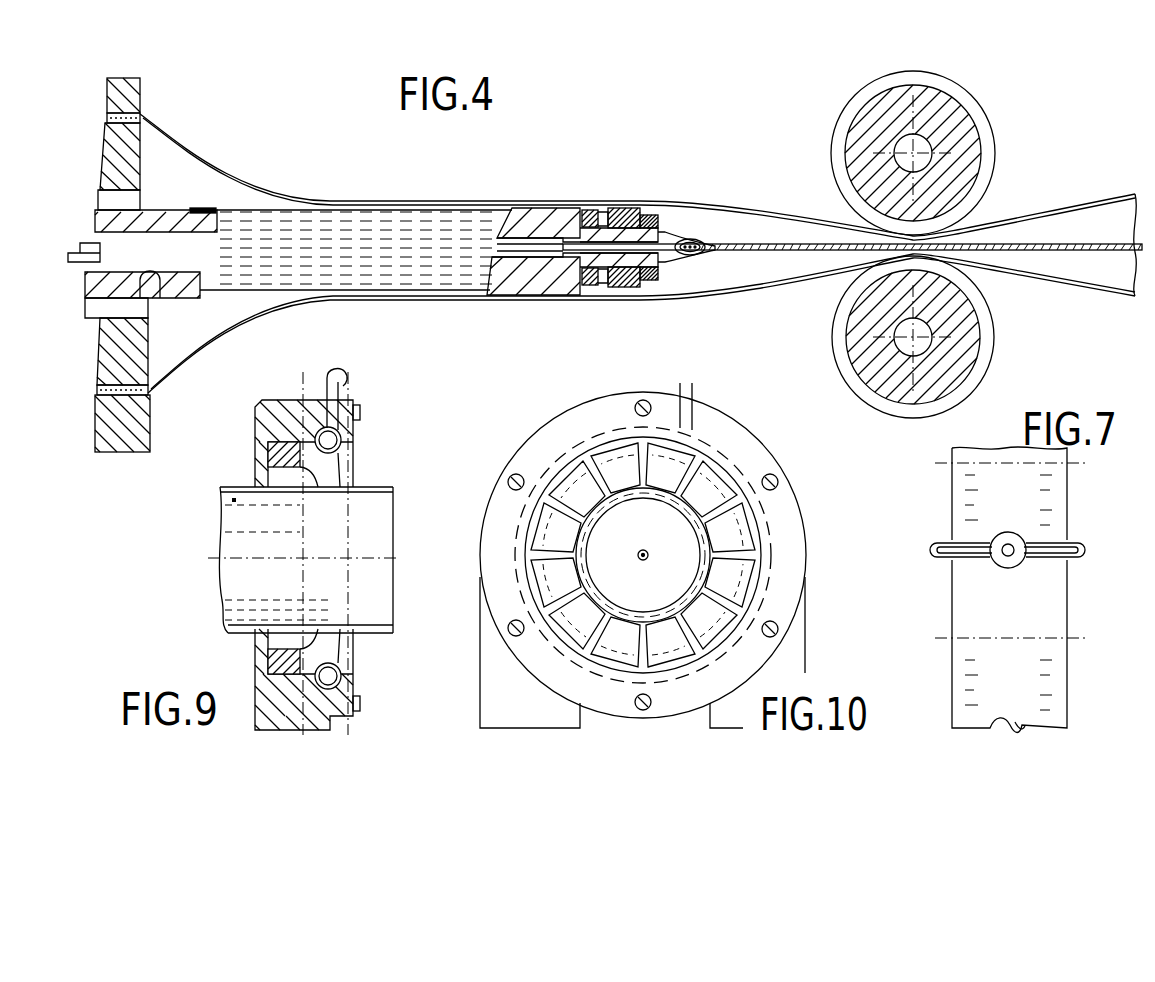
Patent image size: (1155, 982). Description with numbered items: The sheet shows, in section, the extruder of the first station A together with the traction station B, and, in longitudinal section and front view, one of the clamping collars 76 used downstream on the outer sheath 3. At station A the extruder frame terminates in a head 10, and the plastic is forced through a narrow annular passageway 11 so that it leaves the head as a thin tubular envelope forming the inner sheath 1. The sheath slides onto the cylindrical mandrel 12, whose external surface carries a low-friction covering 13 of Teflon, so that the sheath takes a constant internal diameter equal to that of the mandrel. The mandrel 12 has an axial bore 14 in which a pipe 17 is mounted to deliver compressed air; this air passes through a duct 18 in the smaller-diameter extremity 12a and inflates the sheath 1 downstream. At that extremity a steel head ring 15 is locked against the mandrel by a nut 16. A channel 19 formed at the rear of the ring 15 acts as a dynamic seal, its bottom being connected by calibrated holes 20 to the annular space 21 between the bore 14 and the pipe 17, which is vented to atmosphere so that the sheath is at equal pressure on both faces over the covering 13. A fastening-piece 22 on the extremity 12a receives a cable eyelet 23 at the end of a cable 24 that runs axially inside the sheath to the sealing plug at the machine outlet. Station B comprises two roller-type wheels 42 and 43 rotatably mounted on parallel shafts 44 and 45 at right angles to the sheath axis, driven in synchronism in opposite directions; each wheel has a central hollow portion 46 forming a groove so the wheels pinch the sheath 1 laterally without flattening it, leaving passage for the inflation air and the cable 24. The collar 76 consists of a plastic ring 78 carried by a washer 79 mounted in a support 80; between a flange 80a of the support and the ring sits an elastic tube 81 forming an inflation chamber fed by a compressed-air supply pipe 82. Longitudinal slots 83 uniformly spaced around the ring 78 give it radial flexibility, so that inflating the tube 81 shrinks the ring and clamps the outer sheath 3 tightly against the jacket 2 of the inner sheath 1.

In FIG. 4, the inner sheath 1 is at (183, 159).
In FIG. 10, the inner sheath 1 is at (682, 532).
In FIG. 7, the inner sheath 1 is at (946, 548).
In FIG. 9, the intermediate jacket 2 is at (232, 501).
In FIG. 10, the intermediate jacket 2 is at (702, 576).
In FIG. 9, the outer sheath 3 is at (235, 489).
In FIG. 10, the outer sheath 3 is at (585, 560).
In FIG. 4, the head 10 is at (113, 100).
In FIG. 4, the annular passageway 11 is at (110, 119).
In FIG. 4, the cylindrical mandrel 12 is at (233, 205).
In FIG. 4, the mandrel extremity 12a is at (615, 266).
In FIG. 4, the covering 13 is at (204, 208).
In FIG. 4, the bore 14 is at (157, 280).
In FIG. 4, the steel head ring 15 is at (640, 210).
In FIG. 4, the nut 16 is at (655, 220).
In FIG. 4, the pipe 17 is at (97, 263).
In FIG. 4, the duct 18 is at (572, 252).
In FIG. 4, the channel 19 is at (601, 212).
In FIG. 4, the calibrated holes 20 is at (565, 212).
In FIG. 4, the annular space 21 is at (113, 233).
In FIG. 4, the fastening-piece 22 is at (672, 266).
In FIG. 4, the cable eyelet 23 is at (700, 240).
In FIG. 4, the cable 24 is at (1045, 251).
In FIG. 9, the cable 24 is at (218, 565).
In FIG. 10, the cable 24 is at (646, 560).
In FIG. 7, the cable 24 is at (1007, 556).
In FIG. 4, the roller-type wheel 42 is at (833, 134).
In FIG. 7, the roller-type wheel 42 is at (1062, 508).
In FIG. 4, the roller-type wheel 43 is at (840, 370).
In FIG. 7, the roller-type wheel 43 is at (1062, 592).
In FIG. 4, the shaft 44 is at (893, 160).
In FIG. 4, the shaft 45 is at (893, 338).
In FIG. 7, the hollow portion 46 is at (1035, 720).
In FIG. 9, the collar 76 is at (355, 458).
In FIG. 10, the collar 76 is at (745, 511).
In FIG. 9, the ring 78 is at (330, 479).
In FIG. 9, the washer 79 is at (266, 451).
In FIG. 9, the support 80 is at (258, 416).
In FIG. 9, the flange 80a is at (352, 397).
In FIG. 9, the tube 81 is at (354, 441).
In FIG. 10, the tube 81 is at (725, 470).
In FIG. 9, the compressed-air supply pipe 82 is at (326, 388).
In FIG. 10, the compressed-air supply pipe 82 is at (700, 400).
In FIG. 10, the longitudinal slots 83 is at (742, 540).
In FIG. 4, the first station A is at (207, 110).
In FIG. 4, the station B is at (822, 100).